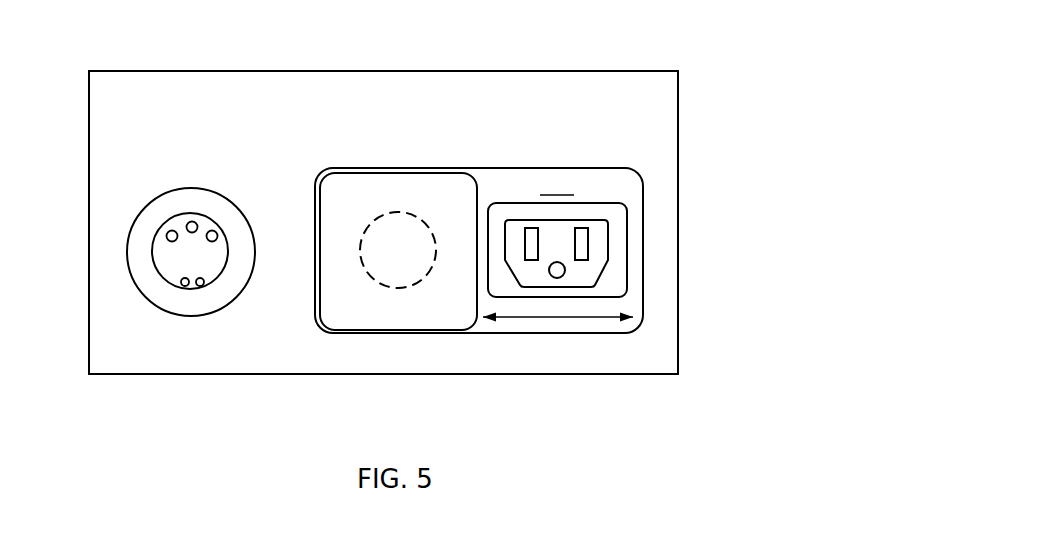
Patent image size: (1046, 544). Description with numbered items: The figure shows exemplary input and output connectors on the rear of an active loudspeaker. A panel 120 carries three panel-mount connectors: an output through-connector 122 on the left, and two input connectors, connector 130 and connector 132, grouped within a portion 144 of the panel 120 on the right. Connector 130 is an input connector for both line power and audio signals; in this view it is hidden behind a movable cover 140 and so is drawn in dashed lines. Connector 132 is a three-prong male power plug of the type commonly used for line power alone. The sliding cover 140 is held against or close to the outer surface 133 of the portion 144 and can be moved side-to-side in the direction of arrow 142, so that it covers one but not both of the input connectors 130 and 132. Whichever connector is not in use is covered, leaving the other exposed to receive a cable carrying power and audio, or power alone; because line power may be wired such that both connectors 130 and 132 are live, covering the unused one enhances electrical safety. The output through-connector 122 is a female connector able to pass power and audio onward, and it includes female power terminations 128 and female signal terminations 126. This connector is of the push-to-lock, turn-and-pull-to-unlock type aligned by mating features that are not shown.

The panel 120 is at (628, 55).
The output through-connector 122 is at (169, 246).
The female signal terminations 126 is at (199, 266).
The female power terminations 128 is at (179, 252).
The input connector 130 is at (362, 265).
The three-prong male power plug connector 132 is at (640, 272).
The outer surface 133 is at (557, 184).
The movable cover 140 is at (412, 318).
The arrow 142 is at (550, 317).
The portion of panel 144 is at (490, 168).